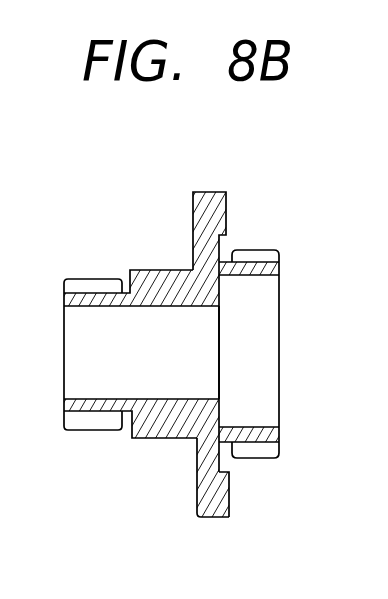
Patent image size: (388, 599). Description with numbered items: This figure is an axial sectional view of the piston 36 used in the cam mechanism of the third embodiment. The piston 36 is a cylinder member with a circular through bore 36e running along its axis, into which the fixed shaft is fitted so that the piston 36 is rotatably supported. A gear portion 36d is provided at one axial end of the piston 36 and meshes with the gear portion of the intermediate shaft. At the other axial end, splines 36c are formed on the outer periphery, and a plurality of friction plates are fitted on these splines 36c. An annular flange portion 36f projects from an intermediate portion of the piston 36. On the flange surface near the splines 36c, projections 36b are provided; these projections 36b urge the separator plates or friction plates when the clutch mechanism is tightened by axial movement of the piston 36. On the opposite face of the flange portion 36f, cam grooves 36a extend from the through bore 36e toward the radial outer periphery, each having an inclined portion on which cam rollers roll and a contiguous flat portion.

The piston 36 is at (264, 210).
The cam grooves 36a is at (197, 218).
The projections 36b is at (223, 497).
The splines 36c is at (263, 450).
The gear portion 36d is at (92, 425).
The through bore 36e is at (187, 307).
The flange portion 36f is at (215, 192).